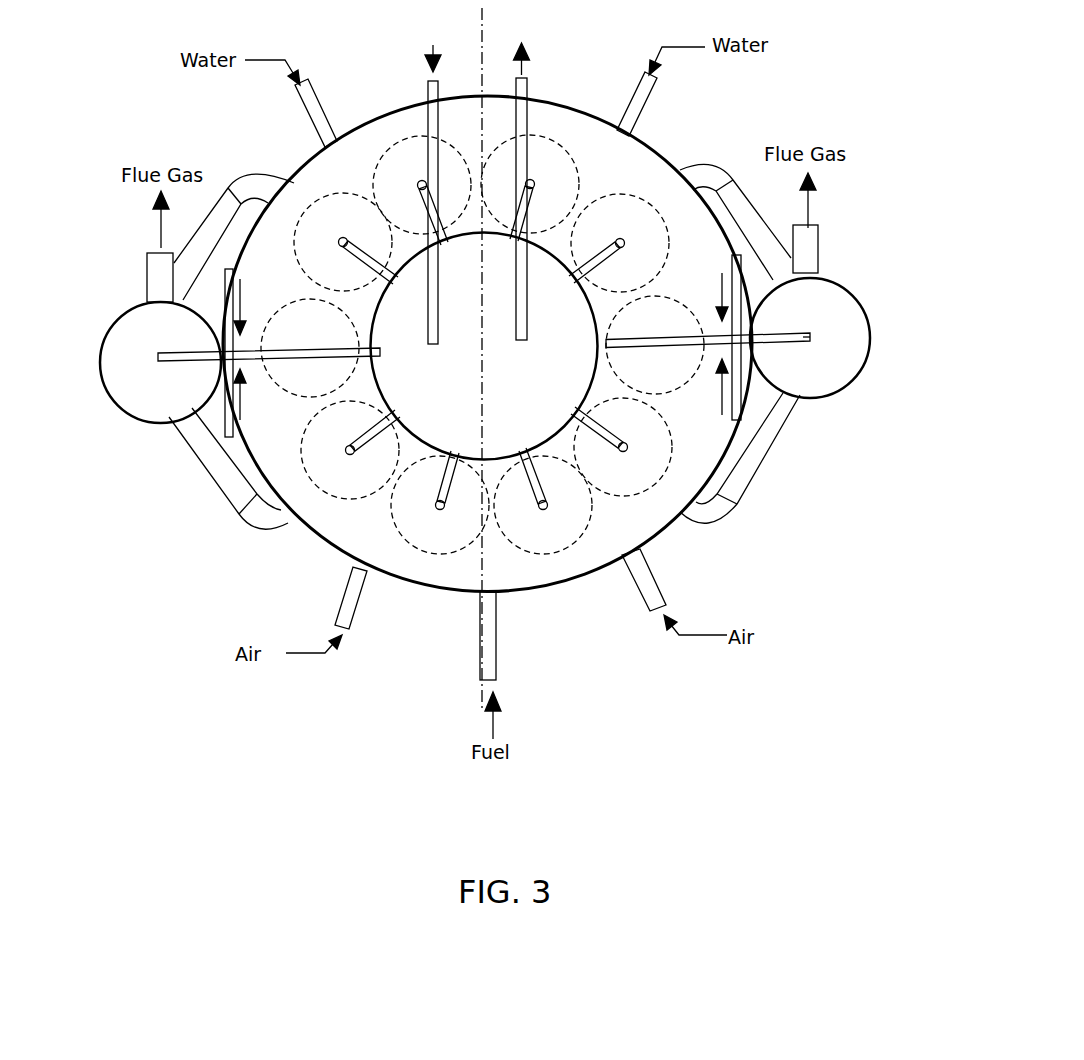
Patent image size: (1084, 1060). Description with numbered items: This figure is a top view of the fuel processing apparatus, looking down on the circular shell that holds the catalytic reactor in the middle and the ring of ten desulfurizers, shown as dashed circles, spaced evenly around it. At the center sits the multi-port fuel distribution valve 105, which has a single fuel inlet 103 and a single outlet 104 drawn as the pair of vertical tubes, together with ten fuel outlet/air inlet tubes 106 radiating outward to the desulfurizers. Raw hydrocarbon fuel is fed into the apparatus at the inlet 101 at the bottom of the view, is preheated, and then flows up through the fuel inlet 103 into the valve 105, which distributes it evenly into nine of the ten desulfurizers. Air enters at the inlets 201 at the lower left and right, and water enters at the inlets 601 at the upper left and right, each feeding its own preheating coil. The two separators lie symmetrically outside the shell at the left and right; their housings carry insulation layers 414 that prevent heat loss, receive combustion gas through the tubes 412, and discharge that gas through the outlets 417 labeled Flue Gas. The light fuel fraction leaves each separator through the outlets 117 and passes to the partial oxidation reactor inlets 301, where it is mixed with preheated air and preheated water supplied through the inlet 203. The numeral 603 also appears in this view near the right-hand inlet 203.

The inlet 101 is at (487, 621).
The fuel inlet 103 is at (424, 84).
The outlet 104 is at (522, 82).
The multi-port fuel distribution valve 105 is at (484, 346).
The fuel outlet/air inlet tubes 106 is at (527, 477).
The outlets 117 is at (767, 338).
The inlet 201 is at (347, 594).
The inlet 203 is at (727, 259).
The partial oxidation reactor inlets 301 is at (660, 339).
The tubes 412 is at (196, 427).
The insulation layers 414 is at (875, 325).
The outlets 417 is at (155, 276).
The inlet 601 is at (314, 112).
The circulation flow 603 is at (734, 412).